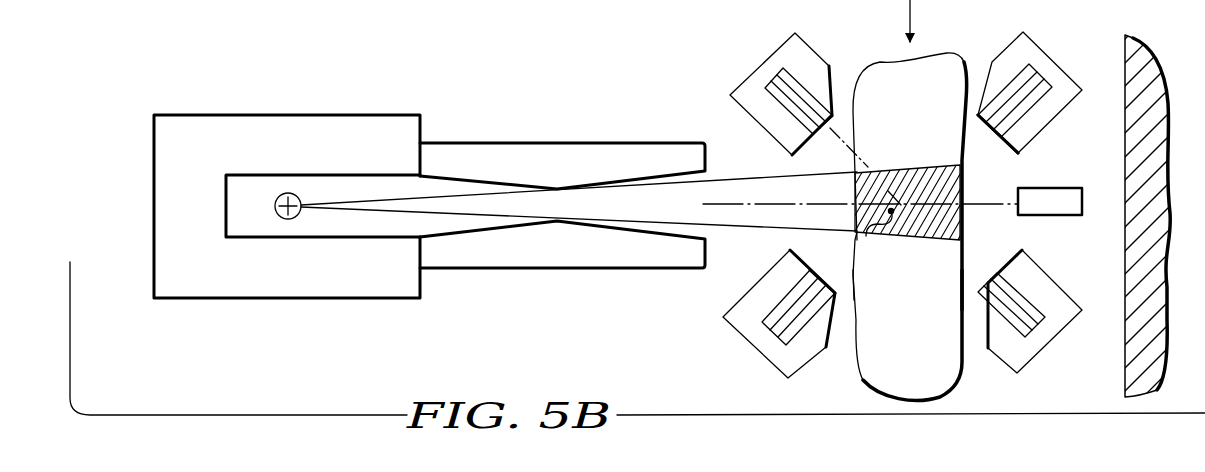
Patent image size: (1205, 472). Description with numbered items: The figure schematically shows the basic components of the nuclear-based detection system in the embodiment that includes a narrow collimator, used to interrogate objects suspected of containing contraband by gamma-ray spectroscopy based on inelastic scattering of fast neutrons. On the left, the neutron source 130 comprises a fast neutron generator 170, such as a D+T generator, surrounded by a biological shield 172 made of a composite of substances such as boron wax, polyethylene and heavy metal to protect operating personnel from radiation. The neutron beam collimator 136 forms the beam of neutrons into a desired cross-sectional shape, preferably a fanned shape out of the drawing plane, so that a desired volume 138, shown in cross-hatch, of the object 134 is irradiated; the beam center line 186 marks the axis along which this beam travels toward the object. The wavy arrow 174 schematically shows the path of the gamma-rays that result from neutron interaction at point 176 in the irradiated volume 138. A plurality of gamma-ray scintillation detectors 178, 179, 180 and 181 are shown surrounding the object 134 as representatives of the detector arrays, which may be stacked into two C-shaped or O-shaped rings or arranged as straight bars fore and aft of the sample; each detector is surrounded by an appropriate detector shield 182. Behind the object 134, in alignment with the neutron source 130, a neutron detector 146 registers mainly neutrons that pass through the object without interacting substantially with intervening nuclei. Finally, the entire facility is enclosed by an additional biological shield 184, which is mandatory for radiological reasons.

The neutron source 130 is at (219, 98).
The object 134 is at (932, 107).
The neutron beam collimator 136 is at (505, 160).
The irradiated volume 138 is at (963, 230).
The neutron detector 146 is at (1063, 222).
The fast neutron generator 170 is at (287, 193).
The biological shield 172 is at (388, 280).
The wavy arrow 174 is at (832, 270).
The point 176 is at (896, 240).
The detector 178 is at (832, 112).
The detector 179 is at (995, 136).
The detector 180 is at (960, 292).
The detector 181 is at (856, 286).
The detector shield 182 is at (764, 76).
The additional biological shield 184 is at (1124, 125).
The beam center line 186 is at (730, 203).